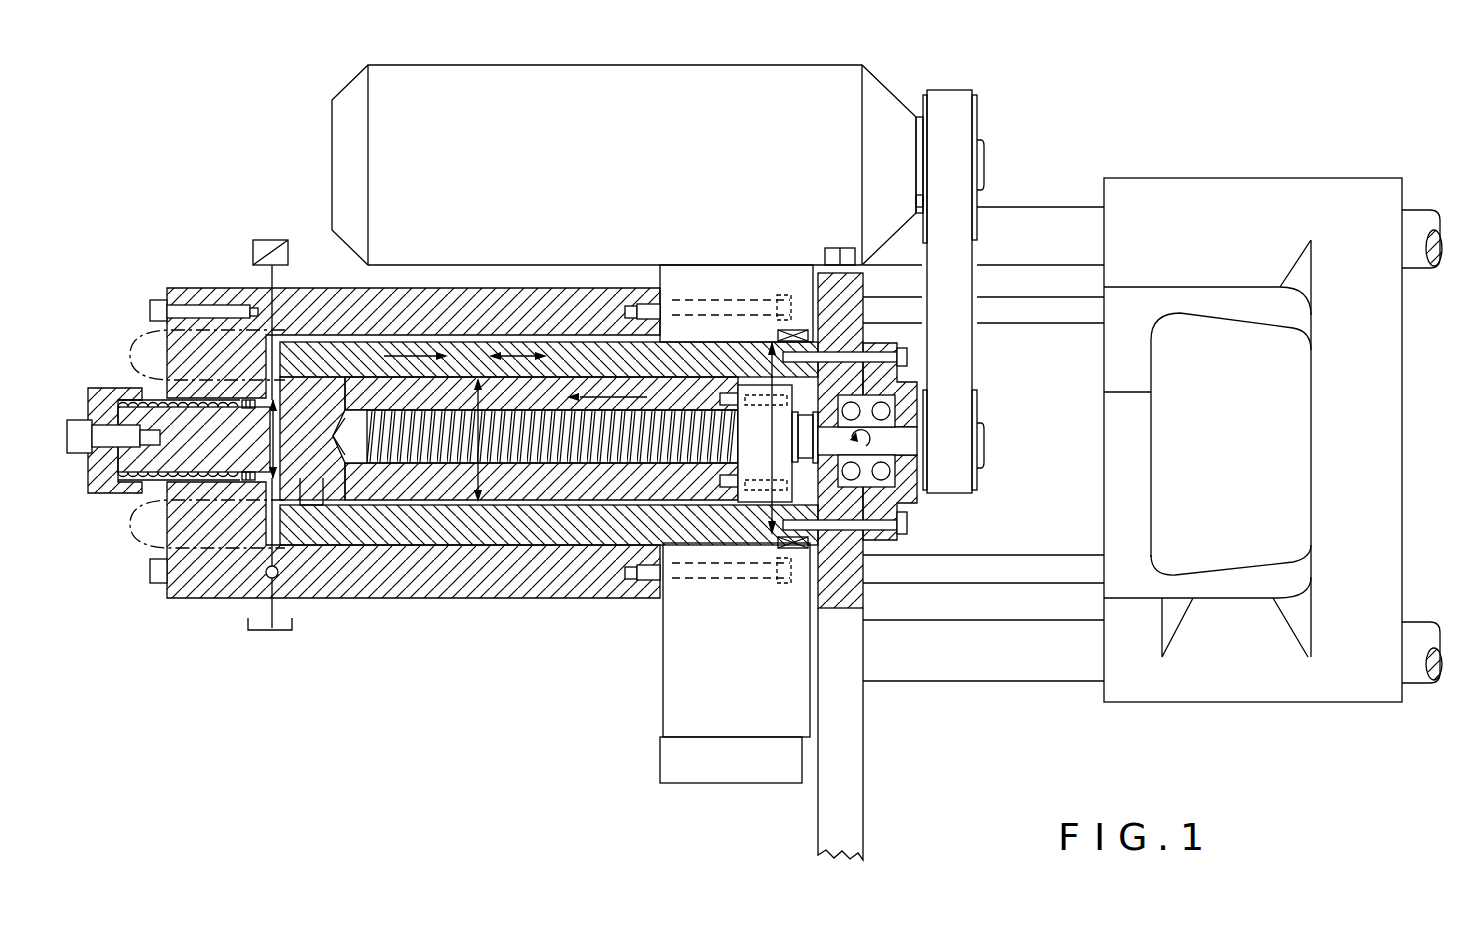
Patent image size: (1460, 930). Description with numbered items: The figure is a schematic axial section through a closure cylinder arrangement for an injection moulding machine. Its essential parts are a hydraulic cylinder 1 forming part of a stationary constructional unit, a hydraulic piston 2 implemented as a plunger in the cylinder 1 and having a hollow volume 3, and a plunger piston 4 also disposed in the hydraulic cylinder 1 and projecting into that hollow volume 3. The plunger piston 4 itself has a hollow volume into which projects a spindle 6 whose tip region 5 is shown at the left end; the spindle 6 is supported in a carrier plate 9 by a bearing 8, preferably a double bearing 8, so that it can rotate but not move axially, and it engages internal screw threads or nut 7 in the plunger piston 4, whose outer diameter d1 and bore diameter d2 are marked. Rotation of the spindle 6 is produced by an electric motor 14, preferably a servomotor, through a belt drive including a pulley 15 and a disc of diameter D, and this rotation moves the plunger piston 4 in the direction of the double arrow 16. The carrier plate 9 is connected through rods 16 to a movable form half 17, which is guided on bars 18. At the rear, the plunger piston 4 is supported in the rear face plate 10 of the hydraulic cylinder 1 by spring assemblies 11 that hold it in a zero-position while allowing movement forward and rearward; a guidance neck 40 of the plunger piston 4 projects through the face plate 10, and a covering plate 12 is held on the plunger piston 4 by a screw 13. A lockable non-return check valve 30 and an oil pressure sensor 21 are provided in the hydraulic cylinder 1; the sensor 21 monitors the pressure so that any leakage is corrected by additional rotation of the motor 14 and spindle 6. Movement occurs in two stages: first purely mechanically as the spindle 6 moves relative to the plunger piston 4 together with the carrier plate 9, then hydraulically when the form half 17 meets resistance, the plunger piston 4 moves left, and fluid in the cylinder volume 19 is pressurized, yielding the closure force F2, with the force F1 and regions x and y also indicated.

The hydraulic cylinder 1 is at (492, 525).
The hydraulic piston 2 is at (583, 512).
The hollow volume 3 is at (335, 470).
The plunger piston 4 is at (367, 477).
The screw tip 5 is at (350, 430).
The spindle 6 is at (428, 463).
The internal screw threads 7 is at (752, 420).
The bearing 8 is at (913, 390).
The carrier plate 9 is at (865, 293).
The rear face plate 10 is at (178, 297).
The spring assemblies 11 is at (177, 397).
The covering plate 12 is at (117, 490).
The screw 13 is at (88, 445).
The electric motor 14 is at (610, 113).
The pulley 15 is at (957, 116).
The rods 16 is at (525, 355).
The form half 17 is at (1238, 652).
The bars 18 is at (1421, 232).
The cylinder volume 19 is at (262, 580).
The oil pressure sensor 21 is at (280, 240).
The lockable non-return check valve 30 is at (300, 500).
The guidance neck 40 is at (147, 482).
The disc diameter D is at (770, 470).
The tube diameter d1 is at (480, 500).
The bore diameter d2 is at (271, 475).
The force F1 is at (620, 395).
The closure force F2 is at (415, 355).
The region x is at (203, 349).
The region y is at (201, 534).